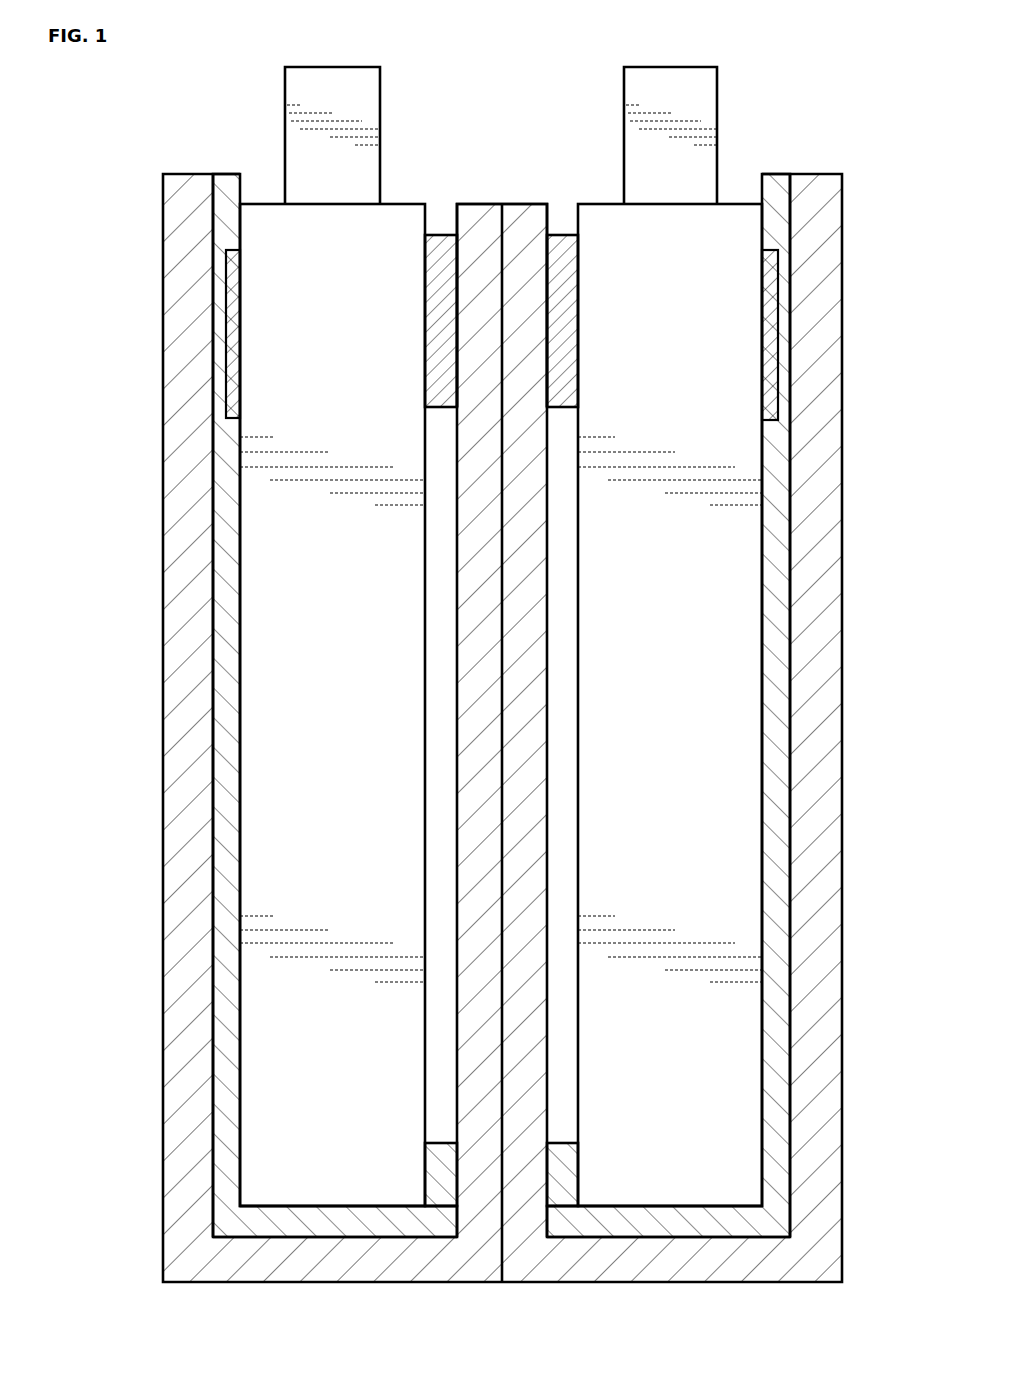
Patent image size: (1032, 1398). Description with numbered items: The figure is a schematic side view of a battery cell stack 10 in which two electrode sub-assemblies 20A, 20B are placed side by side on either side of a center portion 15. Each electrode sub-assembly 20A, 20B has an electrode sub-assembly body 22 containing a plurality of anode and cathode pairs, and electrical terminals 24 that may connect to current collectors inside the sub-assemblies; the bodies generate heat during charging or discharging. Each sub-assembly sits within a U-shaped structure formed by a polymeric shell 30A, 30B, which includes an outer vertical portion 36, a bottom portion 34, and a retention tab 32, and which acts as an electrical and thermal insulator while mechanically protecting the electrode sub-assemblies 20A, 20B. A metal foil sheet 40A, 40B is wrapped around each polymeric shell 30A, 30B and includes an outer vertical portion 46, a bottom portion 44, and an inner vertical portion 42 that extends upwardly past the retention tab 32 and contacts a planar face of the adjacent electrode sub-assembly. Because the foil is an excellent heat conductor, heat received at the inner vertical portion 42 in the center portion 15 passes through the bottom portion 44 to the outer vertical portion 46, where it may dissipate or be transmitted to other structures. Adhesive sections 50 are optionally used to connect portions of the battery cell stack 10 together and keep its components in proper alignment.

The battery cell stack 10 is at (76, 217).
The center portion 15 is at (500, 738).
The electrode sub-assembly 20A is at (332, 705).
The electrode sub-assembly 20B is at (670, 705).
The electrode sub-assembly body 22 is at (302, 1107).
The electrical terminal 24 is at (333, 78).
The polymeric shell 30A is at (222, 632).
The polymeric shell 30B is at (782, 632).
The retention tab 32 is at (430, 1178).
The bottom portion 34 is at (303, 1225).
The outer vertical portion 36 is at (222, 995).
The metal foil sheet 40A is at (178, 885).
The metal foil sheet 40B is at (823, 886).
The inner vertical portion 42 is at (480, 300).
The bottom portion 44 is at (415, 1270).
The outer vertical portion 46 is at (192, 476).
The adhesive section 50 is at (228, 325).